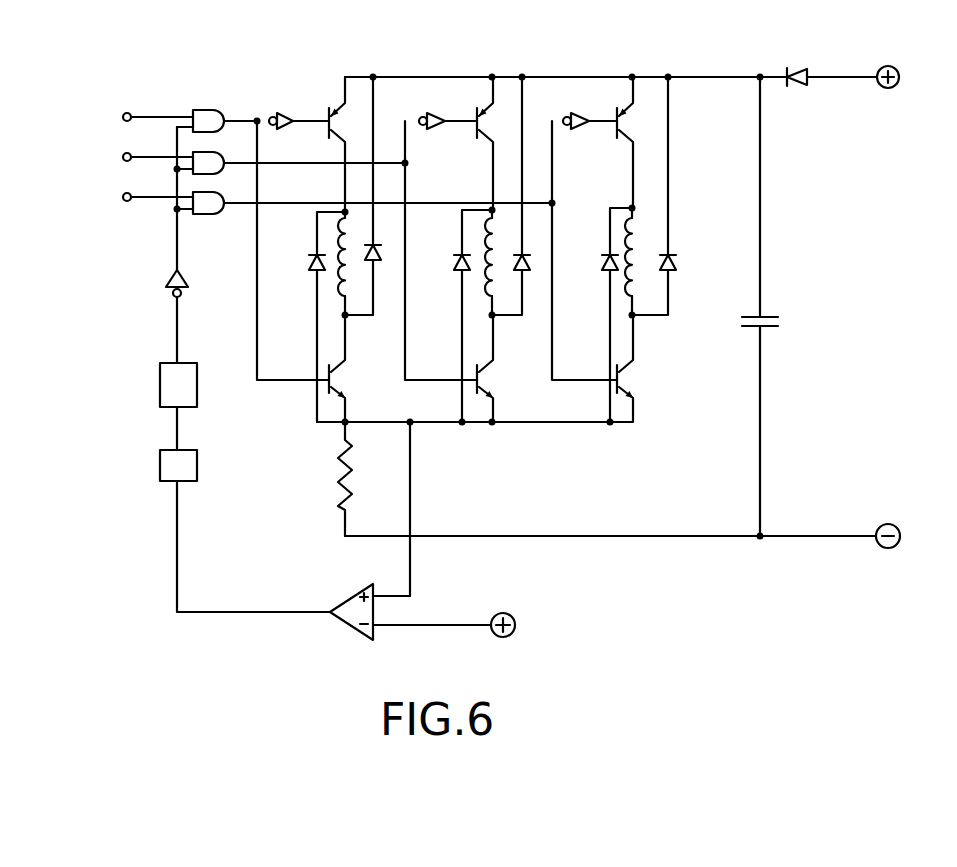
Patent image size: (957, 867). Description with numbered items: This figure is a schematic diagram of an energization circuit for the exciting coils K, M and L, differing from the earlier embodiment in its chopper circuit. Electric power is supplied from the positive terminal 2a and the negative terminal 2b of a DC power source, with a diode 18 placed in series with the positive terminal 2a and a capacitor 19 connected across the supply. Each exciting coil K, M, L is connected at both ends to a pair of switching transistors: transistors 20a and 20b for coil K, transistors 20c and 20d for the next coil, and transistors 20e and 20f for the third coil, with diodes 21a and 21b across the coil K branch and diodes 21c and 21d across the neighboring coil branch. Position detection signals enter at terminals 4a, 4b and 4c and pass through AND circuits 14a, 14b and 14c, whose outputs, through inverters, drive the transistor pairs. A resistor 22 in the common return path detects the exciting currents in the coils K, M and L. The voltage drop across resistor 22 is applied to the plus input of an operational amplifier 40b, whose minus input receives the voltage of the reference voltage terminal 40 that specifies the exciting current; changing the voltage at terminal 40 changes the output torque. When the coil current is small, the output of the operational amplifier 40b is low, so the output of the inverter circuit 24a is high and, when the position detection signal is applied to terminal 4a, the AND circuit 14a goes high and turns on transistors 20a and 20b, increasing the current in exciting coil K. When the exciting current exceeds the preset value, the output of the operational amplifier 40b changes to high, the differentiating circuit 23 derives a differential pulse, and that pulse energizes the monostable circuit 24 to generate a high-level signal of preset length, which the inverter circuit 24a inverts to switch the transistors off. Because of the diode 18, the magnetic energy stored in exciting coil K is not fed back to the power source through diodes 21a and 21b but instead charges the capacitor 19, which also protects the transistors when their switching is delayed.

The positive terminal 2a is at (896, 86).
The negative terminal 2b is at (894, 547).
The terminal 4a is at (126, 112).
The terminal 4b is at (122, 159).
The terminal 4c is at (126, 202).
The AND circuit 14a is at (208, 110).
The AND circuit 14b is at (222, 156).
The AND circuit 14c is at (212, 214).
The diode 18 is at (795, 70).
The capacitor 19 is at (746, 324).
The transistor 20a is at (330, 108).
The transistor 20b is at (338, 378).
The transistor 20c is at (478, 106).
The transistor 20d is at (486, 378).
The transistor 20e is at (618, 106).
The transistor 20f is at (628, 378).
The diode 21a is at (312, 262).
The diode 21b is at (380, 264).
The diode 21c is at (456, 260).
The diode 21d is at (526, 274).
The exciting coil K is at (341, 278).
The exciting coil M is at (490, 290).
The exciting coil L is at (622, 246).
The resistor 22 is at (340, 478).
The differentiating circuit 23 is at (197, 466).
The monostable circuit 24 is at (197, 392).
The inverter circuit 24a is at (190, 282).
The reference voltage terminal 40 is at (511, 635).
The operational amplifier 40b is at (356, 638).